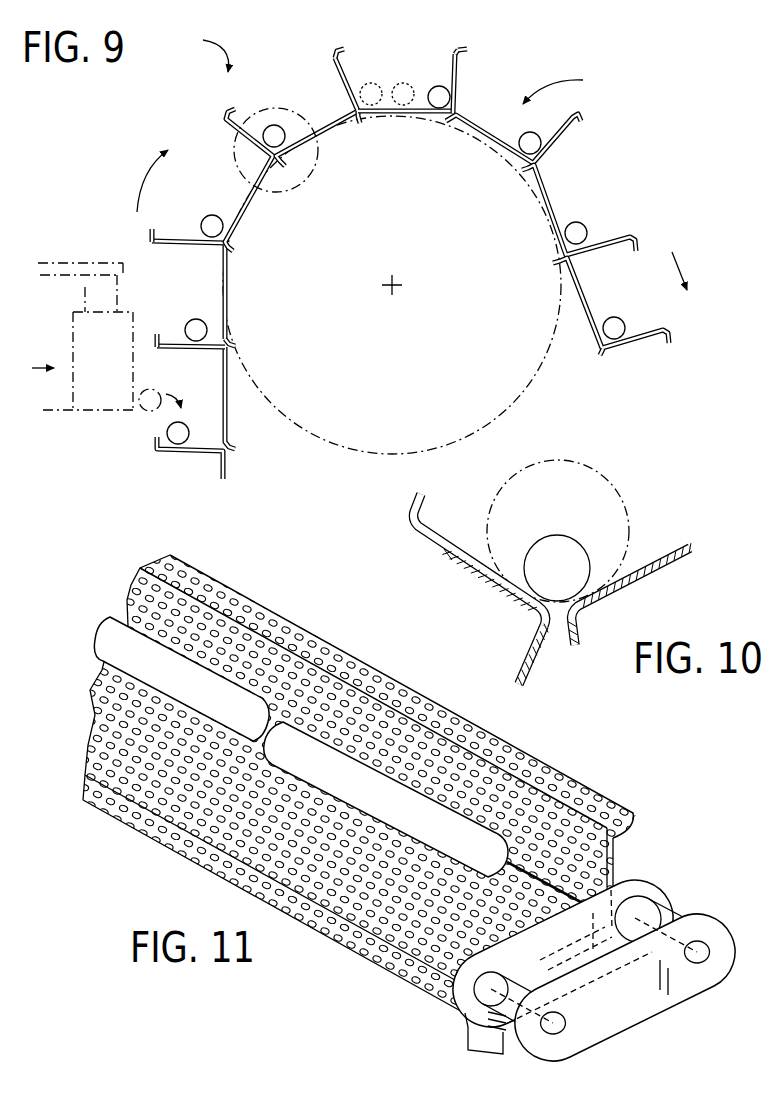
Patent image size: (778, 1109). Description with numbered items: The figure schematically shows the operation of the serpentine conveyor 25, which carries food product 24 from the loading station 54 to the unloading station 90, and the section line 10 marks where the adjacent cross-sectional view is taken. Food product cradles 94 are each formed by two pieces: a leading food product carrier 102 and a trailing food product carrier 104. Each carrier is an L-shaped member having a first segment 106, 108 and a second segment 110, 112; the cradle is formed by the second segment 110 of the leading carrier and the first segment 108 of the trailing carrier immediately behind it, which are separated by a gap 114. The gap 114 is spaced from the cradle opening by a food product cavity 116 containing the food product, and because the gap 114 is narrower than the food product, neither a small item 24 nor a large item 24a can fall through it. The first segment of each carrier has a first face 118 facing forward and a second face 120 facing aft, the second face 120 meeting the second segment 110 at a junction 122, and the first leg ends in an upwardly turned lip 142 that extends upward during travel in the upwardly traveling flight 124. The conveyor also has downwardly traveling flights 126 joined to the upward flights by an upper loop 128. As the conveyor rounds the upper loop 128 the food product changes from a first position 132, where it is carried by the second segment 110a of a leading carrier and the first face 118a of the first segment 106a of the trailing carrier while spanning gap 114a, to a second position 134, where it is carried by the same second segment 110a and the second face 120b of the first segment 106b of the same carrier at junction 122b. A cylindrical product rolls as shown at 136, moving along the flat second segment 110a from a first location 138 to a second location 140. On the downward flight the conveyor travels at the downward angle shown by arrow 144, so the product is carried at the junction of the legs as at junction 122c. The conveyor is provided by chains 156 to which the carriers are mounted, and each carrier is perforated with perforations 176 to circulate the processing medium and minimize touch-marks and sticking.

In FIG. 9, the loading station 54 is at (201, 46).
In FIG. 9, the roller 10 is at (247, 121).
In FIG. 9, the first segment of a trailing food product carrier 106a is at (330, 58).
In FIG. 9, the first face of the first segment 118a is at (343, 63).
In FIG. 9, the first position 132 is at (367, 82).
In FIG. 9, the rolling of the food product 136 is at (403, 82).
In FIG. 9, the second position 134 is at (437, 84).
In FIG. 9, the second face of the first segment 120b is at (461, 49).
In FIG. 9, the first segment of the same carrier 106b is at (468, 55).
In FIG. 9, the junction 122b is at (457, 87).
In FIG. 9, the food product cradle 94 is at (567, 84).
In FIG. 9, the unloading station 90 is at (540, 113).
In FIG. 9, the upwardly turned lip 142 is at (152, 230).
In FIG. 9, the first face 118 is at (182, 224).
In FIG. 9, the leading food product carrier 102 is at (151, 241).
In FIG. 11, the leading food product carrier 102 is at (620, 857).
In FIG. 9, the first segment 106 is at (182, 243).
In FIG. 9, the second face 120 is at (194, 252).
In FIG. 9, the junction 122 is at (227, 263).
In FIG. 9, the food product cavity 116 is at (224, 298).
In FIG. 9, the second segment 110 is at (219, 287).
In FIG. 10, the second segment 110 is at (643, 571).
In FIG. 9, the food product 24 is at (208, 331).
In FIG. 11, the food product 24 is at (180, 684).
In FIG. 9, the gap 114 is at (236, 346).
In FIG. 10, the gap 114 is at (553, 648).
In FIG. 9, the trailing food product carrier 104 is at (157, 343).
In FIG. 9, the first segment of the trailing carrier 108 is at (181, 349).
In FIG. 10, the first segment of the trailing carrier 108 is at (497, 583).
In FIG. 9, the second segment of the trailing carrier 112 is at (220, 395).
In FIG. 9, the gap 114a is at (356, 124).
In FIG. 9, the second segment of a leading carrier 110a is at (386, 117).
In FIG. 9, the first location 138 is at (373, 117).
In FIG. 9, the second location 140 is at (441, 120).
In FIG. 9, the junction 122c is at (566, 228).
In FIG. 9, the arrow indicating downward angle 144 is at (684, 266).
In FIG. 9, the downwardly traveling flight 126 is at (604, 352).
In FIG. 9, the upper loop 128 is at (373, 427).
In FIG. 9, the serpentine conveyor 25 is at (233, 463).
In FIG. 9, the upwardly traveling flight 124 is at (221, 468).
In FIG. 10, the upwardly traveling flight 124 is at (550, 536).
In FIG. 10, the large food item 24a is at (613, 485).
In FIG. 11, the perforations 176 is at (549, 768).
In FIG. 11, the chain 156 is at (622, 1010).